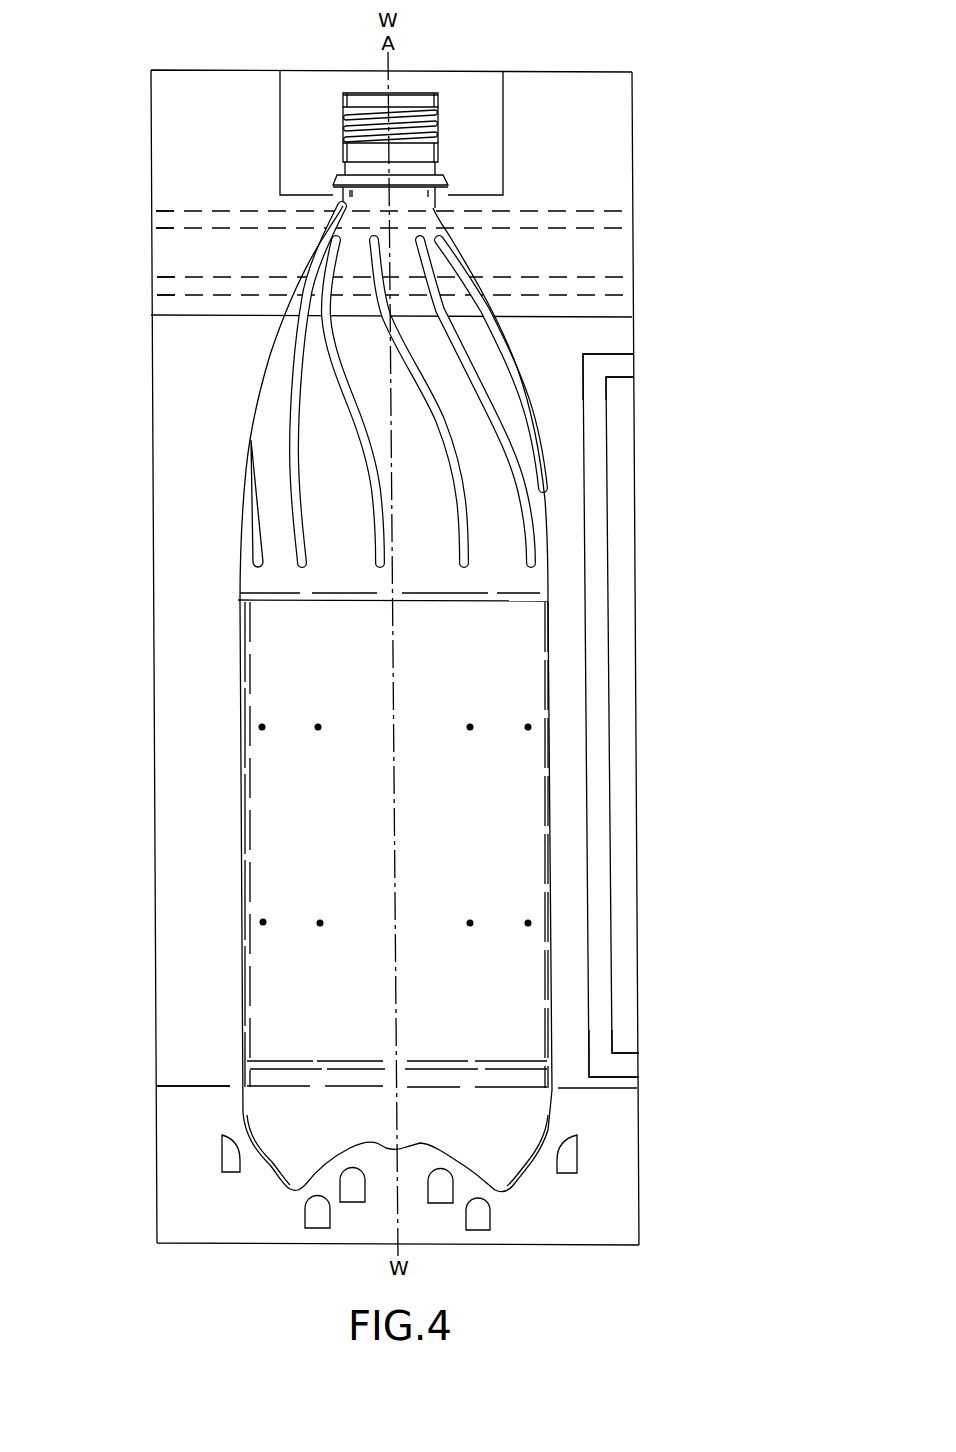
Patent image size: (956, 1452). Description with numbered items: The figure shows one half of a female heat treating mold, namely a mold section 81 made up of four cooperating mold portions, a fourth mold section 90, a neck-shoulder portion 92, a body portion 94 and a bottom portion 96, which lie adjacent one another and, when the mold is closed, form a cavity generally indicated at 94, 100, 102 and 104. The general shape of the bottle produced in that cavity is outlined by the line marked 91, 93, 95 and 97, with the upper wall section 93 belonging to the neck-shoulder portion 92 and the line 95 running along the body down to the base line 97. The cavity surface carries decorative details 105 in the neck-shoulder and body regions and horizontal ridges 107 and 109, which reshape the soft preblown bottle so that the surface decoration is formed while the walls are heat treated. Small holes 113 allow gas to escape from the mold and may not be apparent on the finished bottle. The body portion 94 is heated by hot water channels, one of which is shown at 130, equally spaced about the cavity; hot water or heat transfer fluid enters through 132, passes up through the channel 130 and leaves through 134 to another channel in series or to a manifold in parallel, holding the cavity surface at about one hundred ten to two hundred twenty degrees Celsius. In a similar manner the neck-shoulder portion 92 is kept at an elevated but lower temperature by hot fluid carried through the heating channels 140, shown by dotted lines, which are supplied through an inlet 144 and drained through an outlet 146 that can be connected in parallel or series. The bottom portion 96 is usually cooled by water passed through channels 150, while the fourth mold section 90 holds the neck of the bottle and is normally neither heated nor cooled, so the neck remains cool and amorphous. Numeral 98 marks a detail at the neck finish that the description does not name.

The mold section 81 is at (152, 583).
The fourth mold section 90 is at (292, 134).
The bottle outline line 91 is at (352, 97).
The neck-shoulder mold portion 92 is at (192, 150).
The upper wall section 93 is at (297, 276).
The body mold portion 94 is at (192, 375).
The bottle outline line 95 is at (238, 644).
The bottom mold portion 96 is at (174, 1128).
The bottle outline line 97 is at (323, 1160).
The neck finish 98 is at (420, 150).
The cavity region 100 is at (413, 270).
The cavity region 102 is at (458, 658).
The cavity region 104 is at (460, 1126).
The decorative details 105 is at (293, 447).
The horizontal ridge 107 is at (322, 602).
The horizontal ridge 109 is at (288, 1060).
The small holes 113 is at (262, 727).
The hot water channel 130 is at (575, 660).
The channel inlet 132 is at (640, 1065).
The channel outlet 134 is at (635, 363).
The heating channels 140 is at (620, 218).
The inlet 144 is at (632, 226).
The outlet 146 is at (151, 215).
The cooling channels 150 is at (577, 1157).